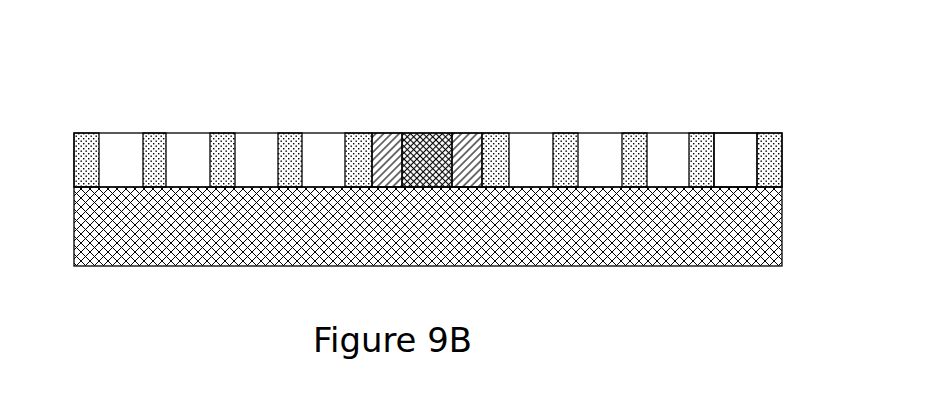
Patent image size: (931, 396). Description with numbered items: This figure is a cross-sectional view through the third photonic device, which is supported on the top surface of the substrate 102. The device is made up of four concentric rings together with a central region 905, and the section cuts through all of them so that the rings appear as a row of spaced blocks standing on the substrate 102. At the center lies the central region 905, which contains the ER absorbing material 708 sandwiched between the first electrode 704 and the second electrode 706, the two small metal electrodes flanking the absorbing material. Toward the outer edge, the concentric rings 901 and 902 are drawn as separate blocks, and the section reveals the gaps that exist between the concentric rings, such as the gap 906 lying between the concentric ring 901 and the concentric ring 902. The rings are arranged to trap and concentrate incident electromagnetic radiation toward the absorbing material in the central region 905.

The substrate 102 is at (683, 237).
The first electrode 704 is at (360, 134).
The second electrode 706 is at (465, 134).
The ER absorbing material 708 is at (425, 134).
The concentric ring 901 is at (772, 134).
The concentric ring 902 is at (700, 134).
The central region 905 is at (440, 186).
The gap 906 is at (738, 138).